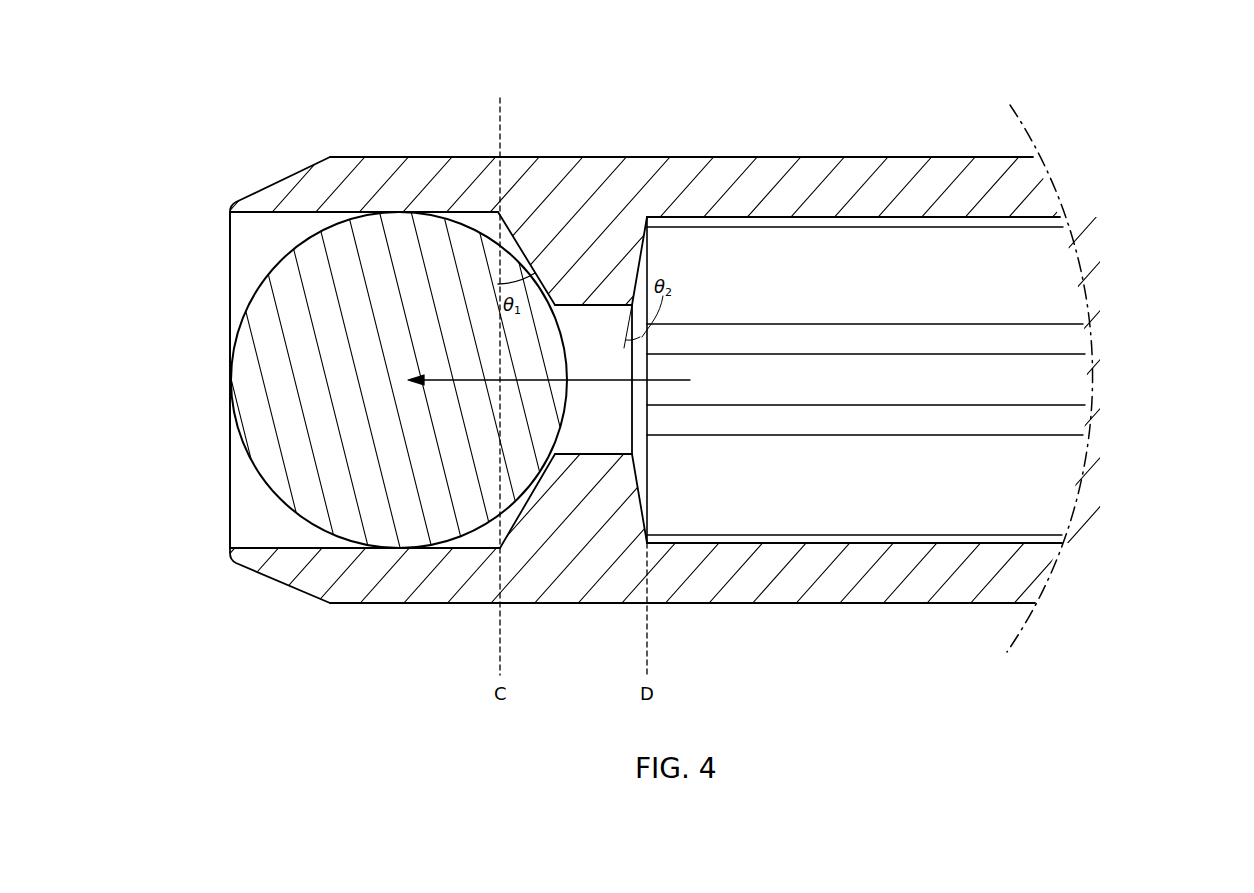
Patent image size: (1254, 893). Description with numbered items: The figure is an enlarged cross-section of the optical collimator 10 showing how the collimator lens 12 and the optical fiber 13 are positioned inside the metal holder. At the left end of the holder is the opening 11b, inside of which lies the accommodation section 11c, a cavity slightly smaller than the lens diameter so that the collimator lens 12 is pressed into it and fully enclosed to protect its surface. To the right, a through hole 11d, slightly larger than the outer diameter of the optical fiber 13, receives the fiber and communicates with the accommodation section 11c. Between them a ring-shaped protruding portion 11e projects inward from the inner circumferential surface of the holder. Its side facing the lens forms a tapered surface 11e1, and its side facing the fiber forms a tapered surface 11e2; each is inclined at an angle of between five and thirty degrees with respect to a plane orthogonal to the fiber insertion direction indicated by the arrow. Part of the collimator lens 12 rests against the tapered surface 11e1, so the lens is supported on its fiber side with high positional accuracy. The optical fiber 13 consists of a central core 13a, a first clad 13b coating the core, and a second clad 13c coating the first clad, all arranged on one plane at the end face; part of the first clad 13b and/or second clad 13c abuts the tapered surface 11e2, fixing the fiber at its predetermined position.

The optical collimator 10 is at (275, 48).
The opening 11b is at (230, 255).
The accommodation section 11c is at (254, 514).
The through hole 11d is at (863, 227).
The protruding portion 11e is at (584, 268).
The tapered surface 11e1 is at (512, 237).
The tapered surface 11e2 is at (641, 267).
The collimator lens 12 is at (245, 383).
The optical fiber 13 is at (937, 380).
The core 13a is at (912, 379).
The first clad 13b is at (1060, 340).
The second clad 13c is at (1060, 292).